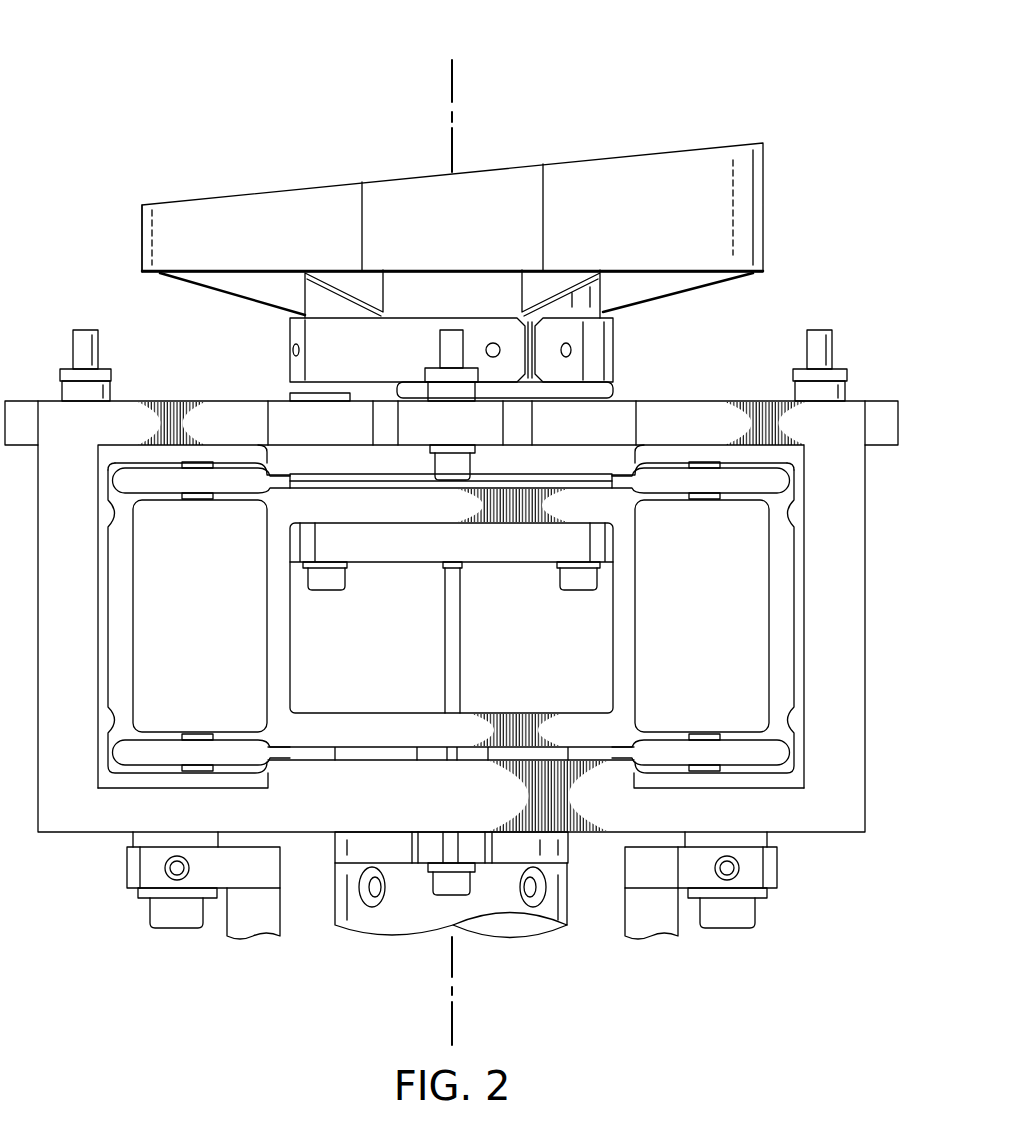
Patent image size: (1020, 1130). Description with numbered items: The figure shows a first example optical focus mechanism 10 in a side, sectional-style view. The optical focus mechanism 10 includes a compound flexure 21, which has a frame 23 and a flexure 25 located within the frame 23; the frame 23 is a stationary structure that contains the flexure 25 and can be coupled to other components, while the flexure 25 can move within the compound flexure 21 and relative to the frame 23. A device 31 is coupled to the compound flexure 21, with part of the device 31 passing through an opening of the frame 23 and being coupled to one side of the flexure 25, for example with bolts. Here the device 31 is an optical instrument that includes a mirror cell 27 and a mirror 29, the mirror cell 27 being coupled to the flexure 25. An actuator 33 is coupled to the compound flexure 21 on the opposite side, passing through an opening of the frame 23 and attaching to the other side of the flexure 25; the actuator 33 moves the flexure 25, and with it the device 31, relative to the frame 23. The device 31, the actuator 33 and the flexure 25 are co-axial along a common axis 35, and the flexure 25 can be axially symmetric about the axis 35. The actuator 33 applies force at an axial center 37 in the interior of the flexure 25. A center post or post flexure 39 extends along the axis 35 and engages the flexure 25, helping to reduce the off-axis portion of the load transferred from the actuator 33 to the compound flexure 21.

The optical focus mechanism 10 is at (227, 61).
The compound flexure 21 is at (888, 551).
The frame 23 is at (857, 693).
The flexure 25 is at (681, 441).
The mirror cell 27 is at (290, 349).
The mirror 29 is at (140, 238).
The device 31 is at (808, 197).
The actuator 33 is at (806, 883).
The common axis 35 is at (452, 72).
The axial center 37 is at (456, 531).
The center post or post flexure 39 is at (445, 638).